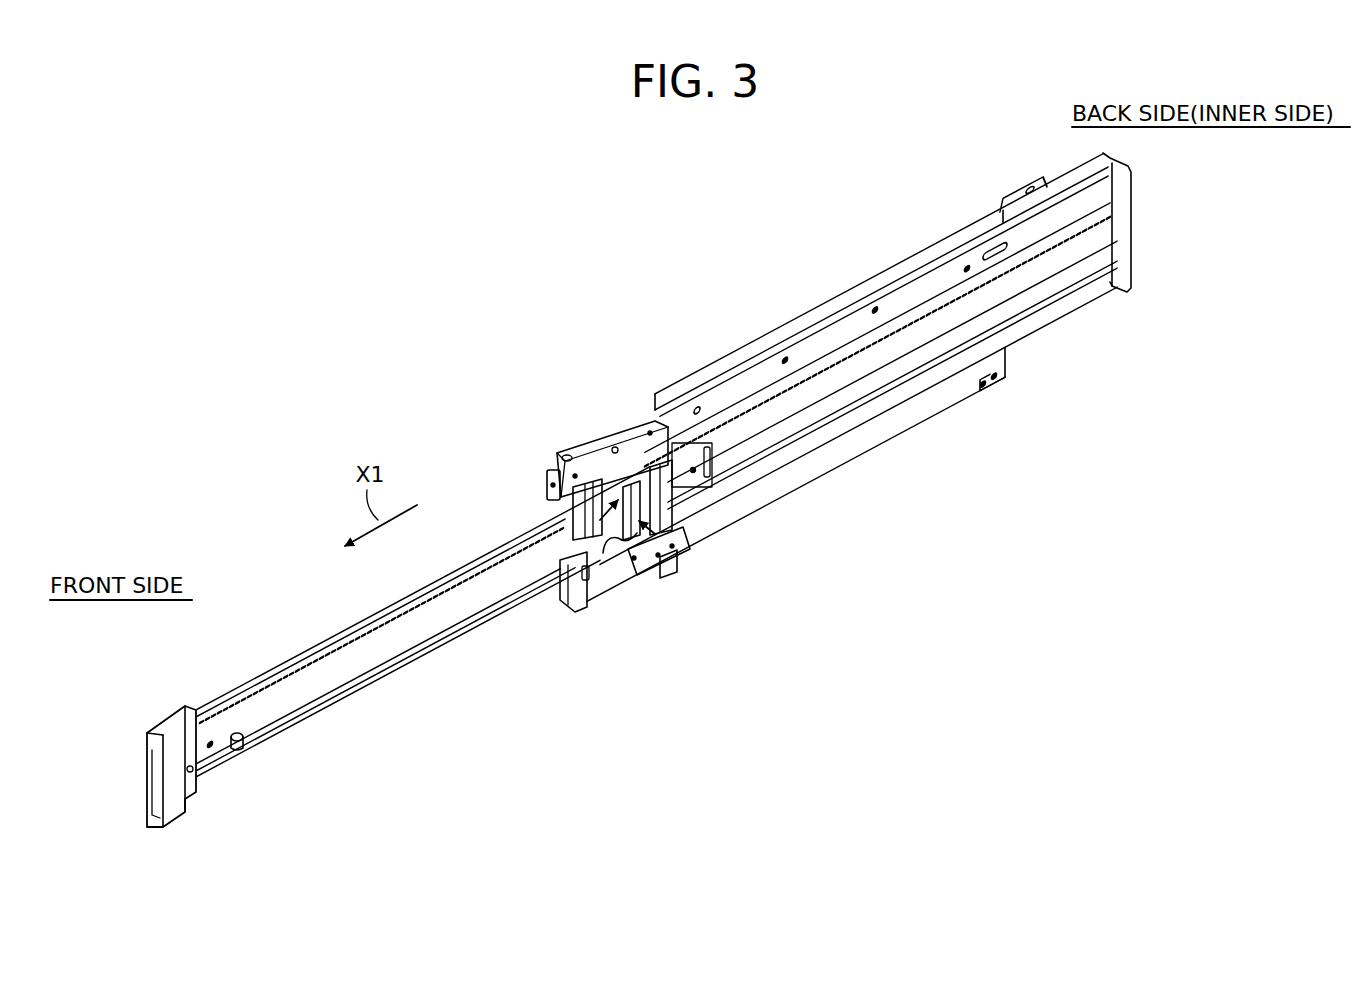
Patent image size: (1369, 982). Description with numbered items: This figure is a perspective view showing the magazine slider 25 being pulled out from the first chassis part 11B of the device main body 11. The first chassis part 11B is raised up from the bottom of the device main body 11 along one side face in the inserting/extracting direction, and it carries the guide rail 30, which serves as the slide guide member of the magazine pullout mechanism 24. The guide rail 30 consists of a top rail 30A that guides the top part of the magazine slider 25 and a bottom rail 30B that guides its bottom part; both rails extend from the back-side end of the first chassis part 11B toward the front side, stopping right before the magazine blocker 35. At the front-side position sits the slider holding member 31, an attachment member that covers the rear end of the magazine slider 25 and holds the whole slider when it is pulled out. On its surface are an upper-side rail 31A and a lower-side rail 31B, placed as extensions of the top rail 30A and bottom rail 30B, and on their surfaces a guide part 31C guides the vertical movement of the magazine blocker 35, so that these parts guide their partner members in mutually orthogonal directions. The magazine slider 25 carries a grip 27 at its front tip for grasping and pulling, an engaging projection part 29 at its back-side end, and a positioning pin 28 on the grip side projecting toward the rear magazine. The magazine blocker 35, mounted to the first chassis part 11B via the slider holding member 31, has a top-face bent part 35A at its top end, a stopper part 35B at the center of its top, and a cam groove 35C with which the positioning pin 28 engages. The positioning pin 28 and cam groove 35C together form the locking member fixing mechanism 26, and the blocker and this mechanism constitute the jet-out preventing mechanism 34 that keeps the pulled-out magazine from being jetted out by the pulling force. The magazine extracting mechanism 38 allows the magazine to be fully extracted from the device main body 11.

The device main body 11 is at (1052, 178).
The first chassis part 11B is at (965, 230).
The guide rail 30 is at (852, 384).
The top rail 30A is at (830, 352).
The bottom rail 30B is at (900, 392).
The magazine pullout mechanism 24 is at (423, 622).
The magazine slider 25 is at (290, 692).
The grip 27 is at (150, 740).
The positioning pin 28 is at (240, 752).
The slider holding member 31 is at (583, 470).
The upper-side rail 31A is at (545, 497).
The lower-side rail 31B is at (562, 587).
The guide part 31C is at (697, 560).
The magazine blocker 35 is at (620, 483).
The top-face bent part 35A is at (640, 470).
The stopper part 35B is at (628, 467).
The cam groove 35C is at (633, 580).
The locking member fixing mechanism 26 is at (663, 560).
The jet-out preventing mechanism 34 is at (600, 601).
The magazine extracting mechanism 38 is at (600, 560).
The engaging projection part 29 is at (705, 520).